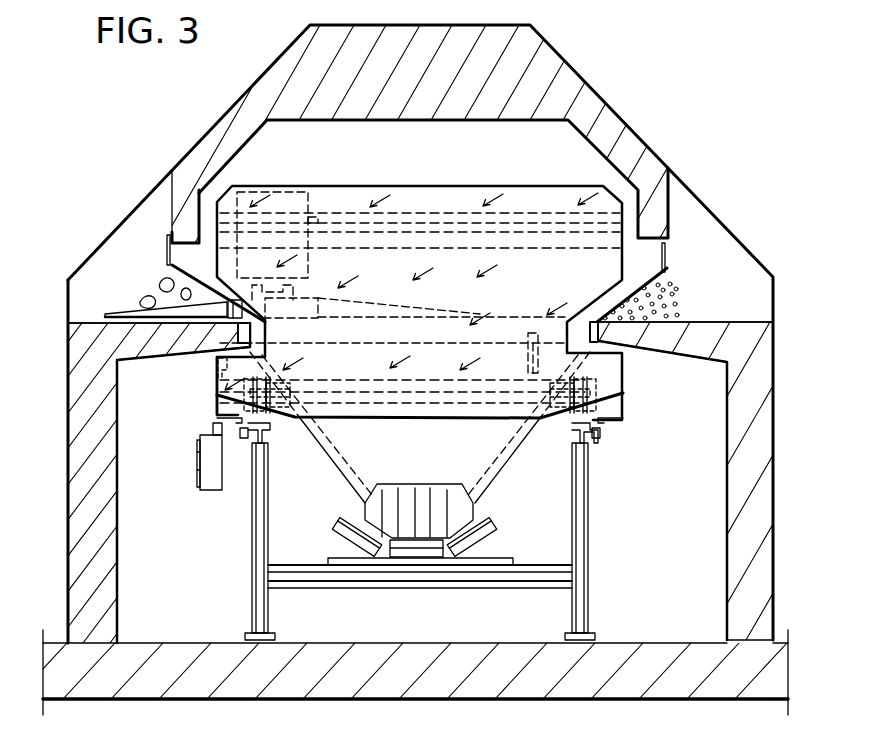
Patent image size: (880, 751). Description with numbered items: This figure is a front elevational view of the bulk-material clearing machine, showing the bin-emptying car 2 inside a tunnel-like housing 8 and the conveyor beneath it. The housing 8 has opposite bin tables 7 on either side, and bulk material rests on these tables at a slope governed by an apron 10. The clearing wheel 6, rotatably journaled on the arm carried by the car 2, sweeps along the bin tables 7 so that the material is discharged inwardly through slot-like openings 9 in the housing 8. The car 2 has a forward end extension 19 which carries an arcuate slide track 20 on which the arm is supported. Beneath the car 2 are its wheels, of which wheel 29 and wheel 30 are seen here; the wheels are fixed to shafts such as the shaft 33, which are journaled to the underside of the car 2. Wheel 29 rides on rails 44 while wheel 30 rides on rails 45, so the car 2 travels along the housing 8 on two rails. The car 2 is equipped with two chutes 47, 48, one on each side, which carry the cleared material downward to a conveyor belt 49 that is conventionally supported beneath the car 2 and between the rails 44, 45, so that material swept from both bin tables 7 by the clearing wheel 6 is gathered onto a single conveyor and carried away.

The bin-emptying car 2 is at (217, 373).
The clearing wheel 6 is at (123, 312).
The bin tables 7 is at (168, 328).
The tunnel-like housing 8 is at (102, 495).
The slot-like openings 9 is at (163, 278).
The apron 10 is at (167, 240).
The forward end extension 19 is at (555, 185).
The arcuate slide track 20 is at (573, 230).
The wheel 29 is at (270, 417).
The wheel 30 is at (623, 386).
The shaft 33 is at (373, 397).
The rails 44 is at (248, 440).
The rails 45 is at (592, 441).
The chute 47 is at (317, 452).
The chute 48 is at (498, 478).
The conveyor belt 49 is at (375, 550).